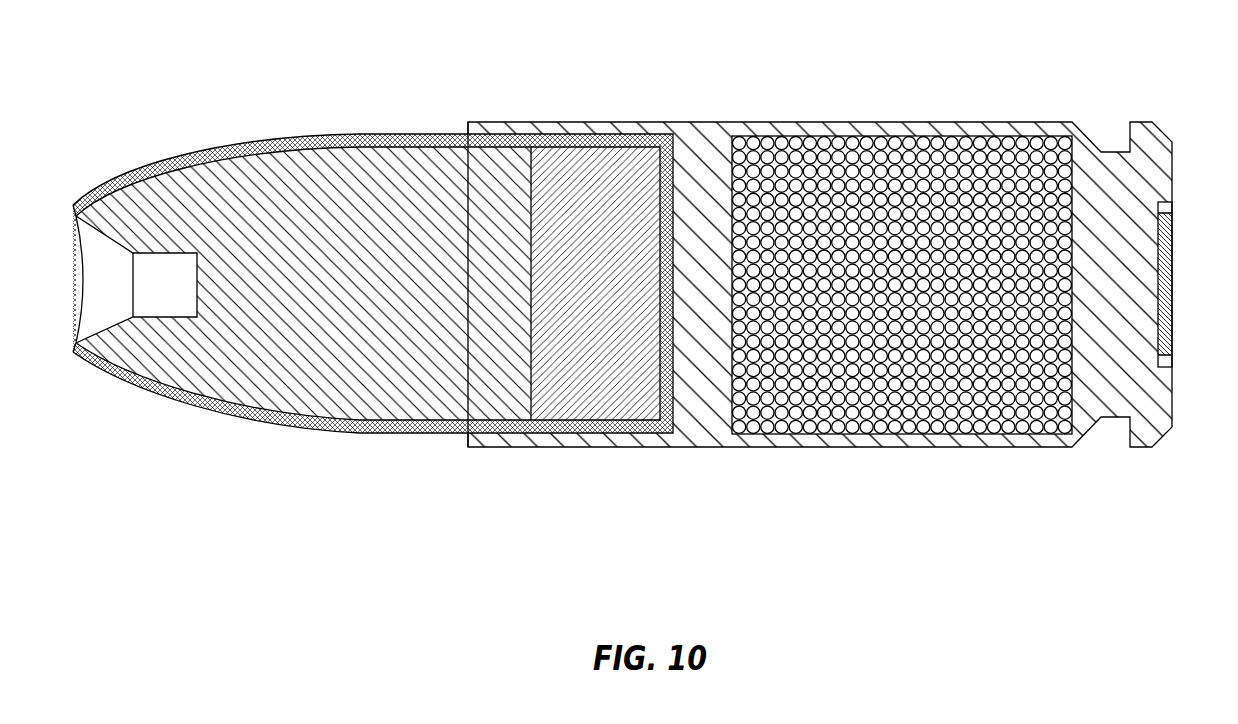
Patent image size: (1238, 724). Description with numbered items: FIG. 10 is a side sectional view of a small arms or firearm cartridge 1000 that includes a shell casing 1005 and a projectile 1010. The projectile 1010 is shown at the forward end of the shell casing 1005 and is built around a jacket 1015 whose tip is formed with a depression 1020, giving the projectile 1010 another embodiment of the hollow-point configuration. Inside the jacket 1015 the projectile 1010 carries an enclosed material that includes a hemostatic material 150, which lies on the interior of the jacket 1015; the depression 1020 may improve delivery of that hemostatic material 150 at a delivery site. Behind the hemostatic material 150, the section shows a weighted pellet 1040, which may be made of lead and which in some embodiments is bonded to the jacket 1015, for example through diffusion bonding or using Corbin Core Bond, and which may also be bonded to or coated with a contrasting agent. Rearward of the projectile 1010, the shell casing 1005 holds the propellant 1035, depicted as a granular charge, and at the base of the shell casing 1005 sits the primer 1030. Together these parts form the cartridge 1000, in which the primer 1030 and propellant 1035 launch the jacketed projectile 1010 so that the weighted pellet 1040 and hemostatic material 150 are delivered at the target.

The small arms or firearm cartridge 1000 is at (243, 42).
The shell casing 1005 is at (697, 133).
The projectile 1010 is at (176, 152).
The jacket 1015 is at (398, 134).
The depression 1020 is at (93, 328).
The primer 1030 is at (1173, 283).
The propellant 1035 is at (864, 145).
The weighted pellet 1040 is at (612, 133).
The hemostatic material 150 is at (310, 410).